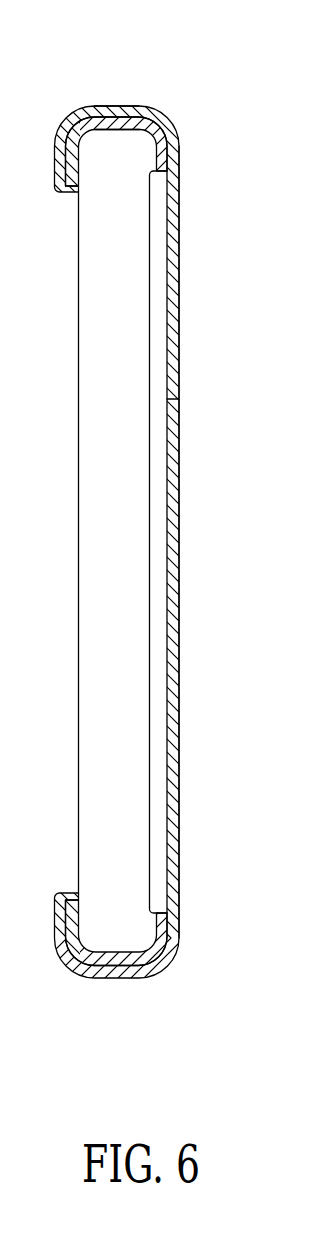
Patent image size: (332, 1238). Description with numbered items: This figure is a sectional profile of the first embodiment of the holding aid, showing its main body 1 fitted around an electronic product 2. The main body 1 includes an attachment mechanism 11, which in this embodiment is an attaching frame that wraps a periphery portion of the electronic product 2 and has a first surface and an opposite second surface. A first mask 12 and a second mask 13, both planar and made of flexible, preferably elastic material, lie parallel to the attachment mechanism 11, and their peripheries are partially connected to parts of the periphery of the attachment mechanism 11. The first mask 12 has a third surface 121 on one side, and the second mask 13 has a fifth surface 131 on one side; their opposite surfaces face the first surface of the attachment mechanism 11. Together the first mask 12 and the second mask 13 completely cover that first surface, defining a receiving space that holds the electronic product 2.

The main body 1 is at (168, 496).
The attachment mechanism 11 is at (90, 122).
The first mask 12 is at (173, 272).
The third surface 121 is at (177, 323).
The second mask 13 is at (173, 603).
The fifth surface 131 is at (178, 538).
The electronic product 2 is at (132, 673).